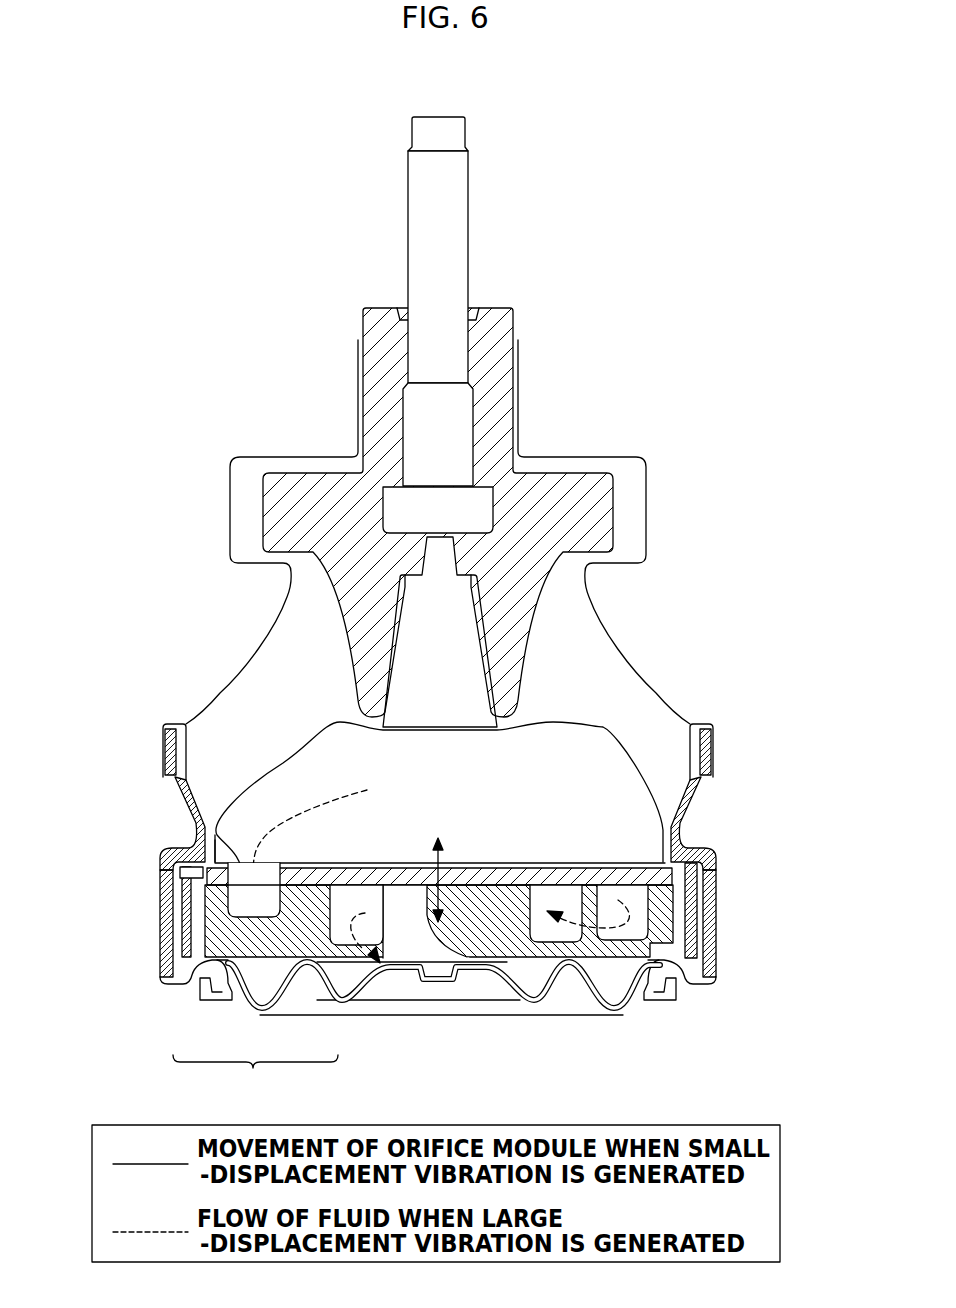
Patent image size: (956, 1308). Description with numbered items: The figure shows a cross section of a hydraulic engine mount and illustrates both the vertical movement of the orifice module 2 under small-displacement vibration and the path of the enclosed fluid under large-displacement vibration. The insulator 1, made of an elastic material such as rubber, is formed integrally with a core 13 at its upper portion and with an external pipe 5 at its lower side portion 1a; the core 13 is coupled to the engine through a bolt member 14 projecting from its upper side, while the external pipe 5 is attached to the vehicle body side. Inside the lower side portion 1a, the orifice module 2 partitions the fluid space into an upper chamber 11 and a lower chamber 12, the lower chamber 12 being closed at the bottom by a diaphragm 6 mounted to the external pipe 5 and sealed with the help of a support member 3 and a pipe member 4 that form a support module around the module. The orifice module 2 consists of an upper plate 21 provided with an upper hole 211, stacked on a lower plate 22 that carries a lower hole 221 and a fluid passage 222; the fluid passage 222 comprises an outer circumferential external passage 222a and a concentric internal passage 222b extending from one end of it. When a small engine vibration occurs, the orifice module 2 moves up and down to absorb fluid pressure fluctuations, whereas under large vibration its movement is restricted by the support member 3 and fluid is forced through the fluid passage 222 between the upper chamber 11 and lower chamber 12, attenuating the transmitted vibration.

The insulator 1 is at (620, 642).
The lower side portion 1a is at (717, 878).
The orifice module 2 is at (482, 868).
The support member 3 is at (190, 911).
The pipe member 4 is at (183, 878).
The external pipe 5 is at (714, 912).
The diaphragm 6 is at (531, 998).
The upper chamber 11 is at (585, 760).
The lower chamber 12 is at (354, 976).
The core 13 is at (385, 412).
The bolt member 14 is at (415, 226).
The upper plate 21 is at (549, 877).
The lower plate 22 is at (590, 950).
The upper hole 211 is at (215, 835).
The lower hole 221 is at (428, 948).
The fluid passage 222 is at (255, 1076).
The external passage 222a is at (240, 907).
The internal passage 222b is at (342, 923).